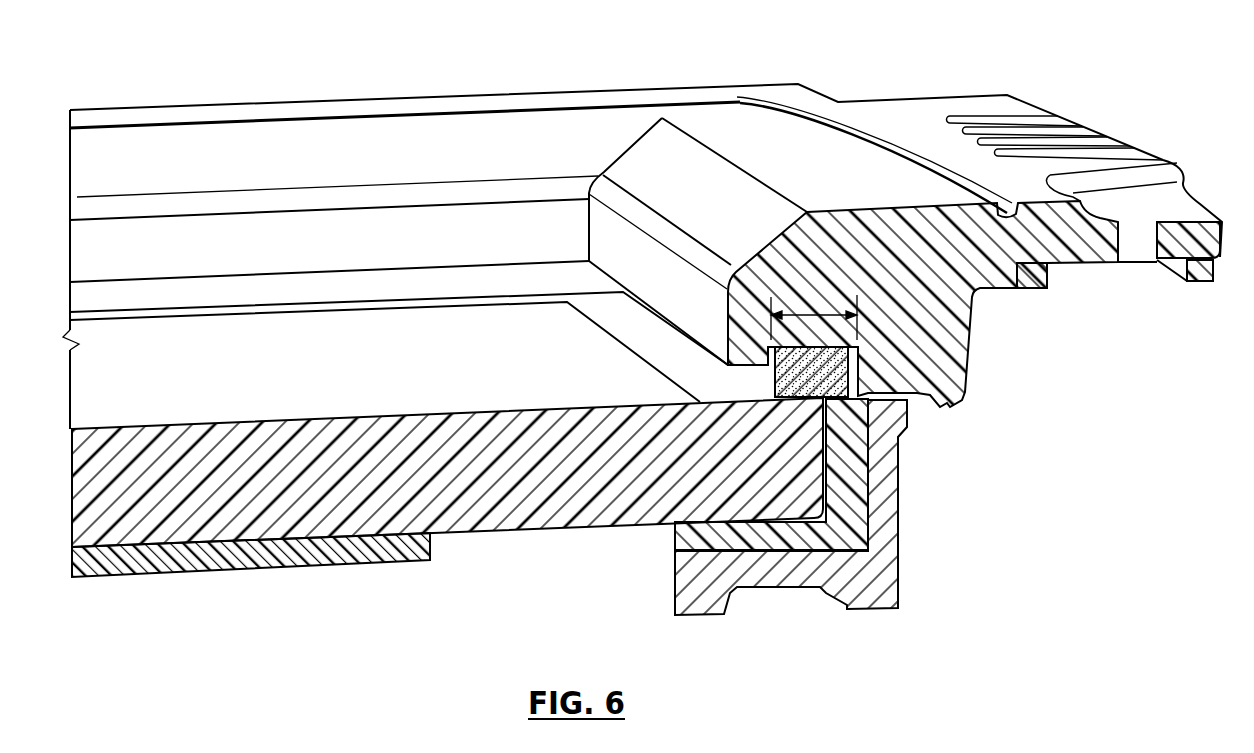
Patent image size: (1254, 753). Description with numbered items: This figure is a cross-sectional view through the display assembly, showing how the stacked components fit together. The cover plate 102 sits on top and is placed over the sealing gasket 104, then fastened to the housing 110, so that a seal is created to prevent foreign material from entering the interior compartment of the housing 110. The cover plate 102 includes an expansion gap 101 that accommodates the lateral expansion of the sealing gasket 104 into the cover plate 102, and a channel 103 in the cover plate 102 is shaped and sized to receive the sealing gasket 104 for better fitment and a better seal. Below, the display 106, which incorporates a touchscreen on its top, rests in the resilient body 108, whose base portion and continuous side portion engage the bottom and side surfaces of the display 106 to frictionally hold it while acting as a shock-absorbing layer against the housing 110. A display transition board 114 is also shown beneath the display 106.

The expansion gap 101 is at (855, 363).
The cover plate 102 is at (920, 117).
The channel 103 is at (810, 315).
The sealing gasket 104 is at (787, 378).
The display 106 is at (492, 498).
The resilient body 108 is at (857, 517).
The housing 110 is at (863, 577).
The display transition board 114 is at (312, 560).